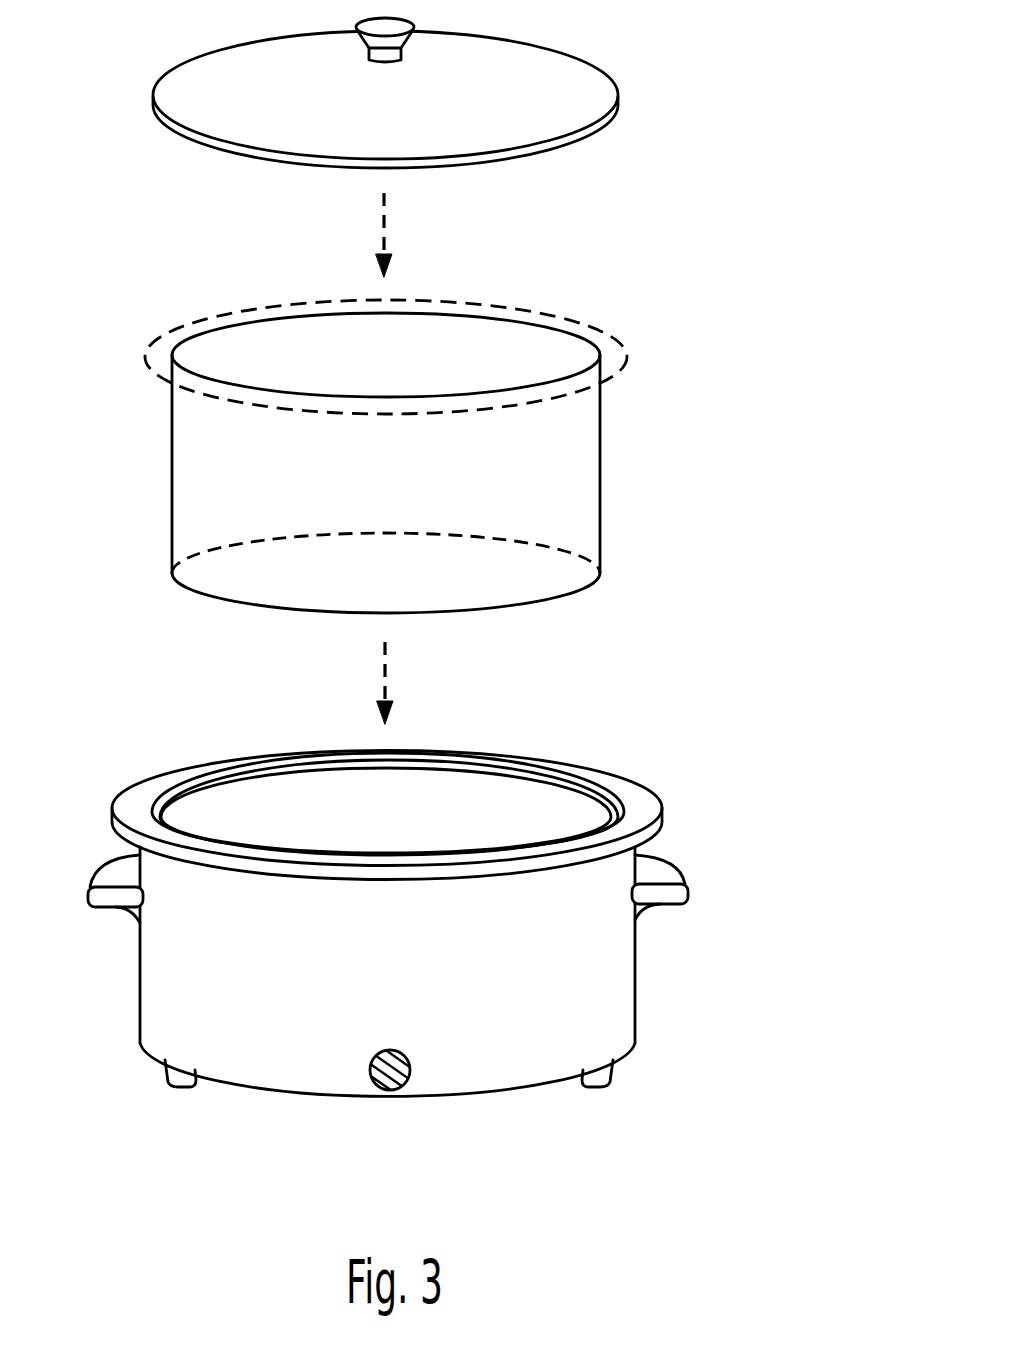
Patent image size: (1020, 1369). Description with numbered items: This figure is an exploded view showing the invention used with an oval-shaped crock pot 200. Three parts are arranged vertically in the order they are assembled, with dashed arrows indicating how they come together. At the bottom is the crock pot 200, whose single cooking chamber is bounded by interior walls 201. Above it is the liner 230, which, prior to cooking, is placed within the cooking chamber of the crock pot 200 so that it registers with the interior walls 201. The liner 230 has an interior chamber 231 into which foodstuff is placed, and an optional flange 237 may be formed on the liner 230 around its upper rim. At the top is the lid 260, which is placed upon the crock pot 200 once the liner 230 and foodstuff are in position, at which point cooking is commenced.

The crock pot 200 is at (678, 942).
The interior walls 201 is at (411, 831).
The liner 230 is at (636, 449).
The interior chamber 231 is at (409, 370).
The flange 237 is at (621, 343).
The lid 260 is at (641, 80).